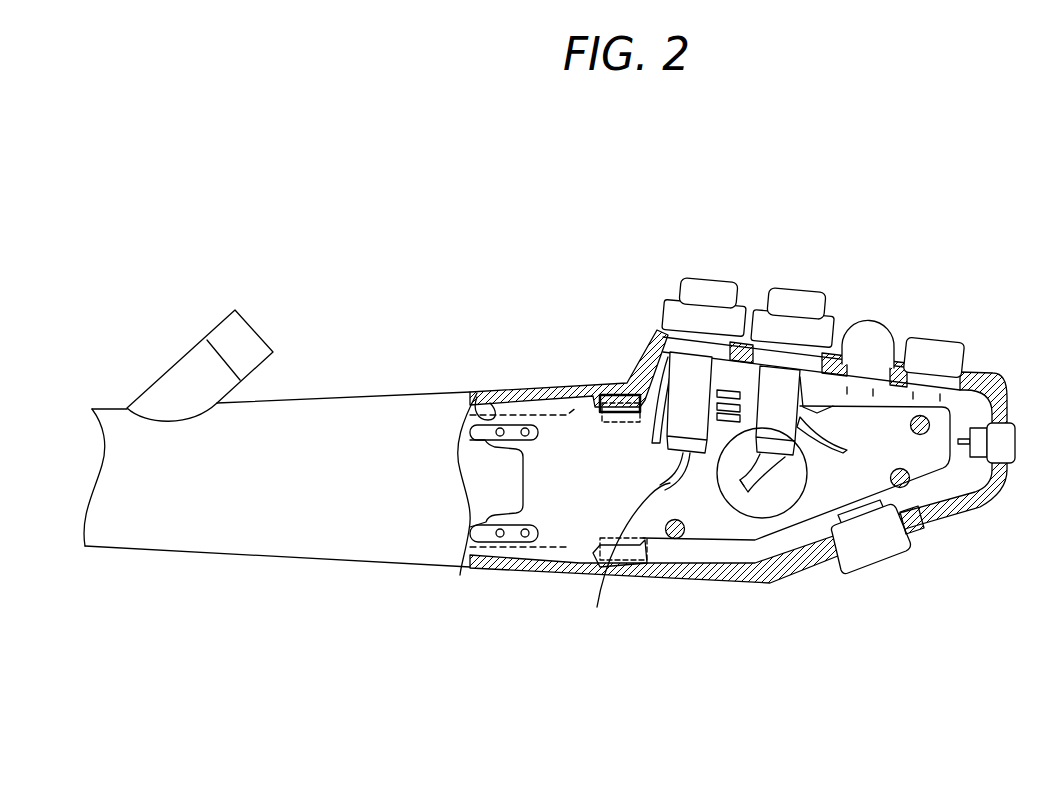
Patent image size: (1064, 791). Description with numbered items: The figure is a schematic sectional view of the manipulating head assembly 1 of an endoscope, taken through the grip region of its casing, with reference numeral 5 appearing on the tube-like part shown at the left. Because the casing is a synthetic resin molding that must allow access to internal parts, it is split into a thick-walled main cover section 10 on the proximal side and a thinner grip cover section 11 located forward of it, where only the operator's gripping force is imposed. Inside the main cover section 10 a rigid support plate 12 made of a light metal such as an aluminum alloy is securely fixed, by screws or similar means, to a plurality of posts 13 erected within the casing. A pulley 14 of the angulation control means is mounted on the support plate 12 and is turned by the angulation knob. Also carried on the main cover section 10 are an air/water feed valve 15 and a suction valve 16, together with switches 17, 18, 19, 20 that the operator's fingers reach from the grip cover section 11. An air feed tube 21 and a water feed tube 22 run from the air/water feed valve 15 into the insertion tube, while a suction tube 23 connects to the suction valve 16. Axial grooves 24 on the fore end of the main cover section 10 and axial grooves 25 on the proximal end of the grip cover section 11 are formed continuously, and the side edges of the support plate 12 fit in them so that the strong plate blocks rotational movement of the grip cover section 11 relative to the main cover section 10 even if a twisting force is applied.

The manipulating head assembly 1 is at (382, 357).
The tube end 5 is at (192, 367).
The main cover section 10 is at (772, 573).
The grip cover section 11 is at (292, 537).
The rigid support plate 12 is at (575, 503).
The posts 13 is at (681, 540).
The pulley 14 is at (787, 490).
The air/water feed valve 15 is at (710, 293).
The suction valve 16 is at (800, 297).
The switch 17 is at (866, 330).
The switch 18 is at (938, 352).
The switch 19 is at (1003, 437).
The switch 20 is at (873, 555).
The air feed tube 21 is at (637, 385).
The water feed tube 22 is at (597, 607).
The suction tube 23 is at (760, 490).
The axial grooves 24 is at (647, 562).
The axial grooves 25 is at (477, 397).